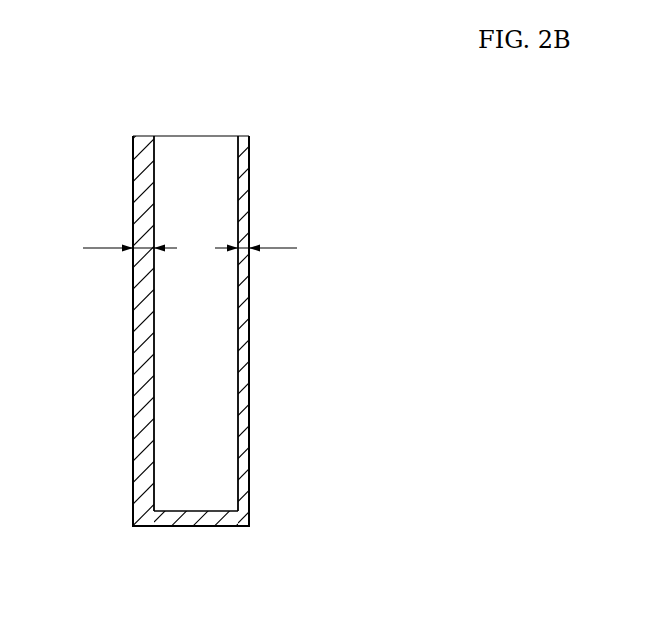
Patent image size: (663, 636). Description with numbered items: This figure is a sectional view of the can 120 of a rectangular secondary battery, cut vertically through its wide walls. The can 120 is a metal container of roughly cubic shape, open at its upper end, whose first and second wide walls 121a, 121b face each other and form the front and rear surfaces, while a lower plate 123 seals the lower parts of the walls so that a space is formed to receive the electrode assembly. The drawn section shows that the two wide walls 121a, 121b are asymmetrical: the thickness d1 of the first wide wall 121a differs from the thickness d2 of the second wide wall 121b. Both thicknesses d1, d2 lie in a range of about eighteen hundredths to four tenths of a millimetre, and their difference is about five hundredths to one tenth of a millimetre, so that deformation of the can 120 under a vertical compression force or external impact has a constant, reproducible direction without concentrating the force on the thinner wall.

The can 120 is at (76, 112).
The first wide wall 121a is at (140, 359).
The second wide wall 121b is at (245, 358).
The lower plate 123 is at (190, 520).
The thickness of the first wide wall d1 is at (130, 239).
The thickness of the second wide wall d2 is at (256, 239).